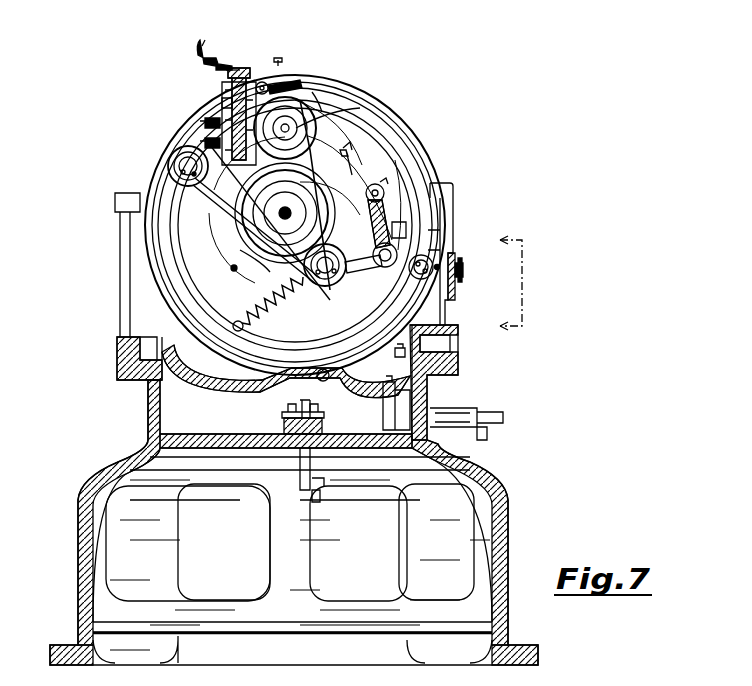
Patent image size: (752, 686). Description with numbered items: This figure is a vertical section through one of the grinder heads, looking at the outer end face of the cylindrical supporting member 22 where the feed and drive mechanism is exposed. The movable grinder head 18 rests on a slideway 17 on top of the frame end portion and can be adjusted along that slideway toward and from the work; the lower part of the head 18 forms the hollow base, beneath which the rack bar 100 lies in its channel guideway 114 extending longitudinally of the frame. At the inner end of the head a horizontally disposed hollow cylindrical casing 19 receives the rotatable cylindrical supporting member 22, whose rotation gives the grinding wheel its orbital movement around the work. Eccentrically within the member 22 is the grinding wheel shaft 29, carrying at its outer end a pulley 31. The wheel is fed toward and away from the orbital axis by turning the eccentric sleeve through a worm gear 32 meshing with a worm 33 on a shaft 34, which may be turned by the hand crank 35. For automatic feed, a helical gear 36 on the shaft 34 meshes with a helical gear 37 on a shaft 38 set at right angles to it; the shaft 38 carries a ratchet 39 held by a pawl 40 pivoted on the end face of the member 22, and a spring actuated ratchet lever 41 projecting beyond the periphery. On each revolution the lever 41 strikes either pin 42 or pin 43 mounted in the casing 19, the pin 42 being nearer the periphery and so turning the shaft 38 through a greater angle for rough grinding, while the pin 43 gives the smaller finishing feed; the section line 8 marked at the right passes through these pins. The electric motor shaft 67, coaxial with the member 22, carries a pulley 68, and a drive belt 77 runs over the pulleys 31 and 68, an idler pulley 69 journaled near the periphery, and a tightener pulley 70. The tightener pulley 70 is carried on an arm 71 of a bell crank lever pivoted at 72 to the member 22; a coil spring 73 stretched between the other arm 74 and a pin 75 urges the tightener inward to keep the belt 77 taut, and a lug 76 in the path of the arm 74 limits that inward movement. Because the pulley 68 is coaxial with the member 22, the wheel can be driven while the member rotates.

The section line 8- 8 is at (502, 285).
The slideway 17 is at (140, 388).
The movable grinder head 18 is at (146, 294).
The hollow cylindrical casing 19 is at (434, 162).
The cylindrical supporting member 22 is at (380, 135).
The shaft 29 is at (300, 118).
The pulley 31 is at (356, 71).
The worm gear 32 is at (316, 130).
The worm 33 is at (208, 123).
The shaft 34 is at (225, 73).
The hand crank 35 is at (215, 68).
The helical gear 36 is at (220, 92).
The helical gear 37 is at (258, 73).
The shaft 38 is at (328, 92).
The ratchet 39 is at (276, 73).
The pawl 40 is at (288, 86).
The spring actuated ratchet lever 41 is at (251, 69).
The pin 42 is at (464, 264).
The pin 43 is at (445, 283).
The motor shaft 67 is at (270, 218).
The pulley 68 is at (333, 184).
The idler pulley 69 is at (180, 167).
The tightener pulley 70 is at (320, 286).
The arm 71 is at (360, 288).
The pivot 72 is at (432, 236).
The coil spring 73 is at (282, 310).
The arm 74 is at (414, 197).
The pin 75 is at (239, 316).
The lug 76 is at (400, 222).
The drive belt 77 is at (182, 228).
The rack bar 100 is at (322, 420).
The channel guideway 114 is at (280, 421).